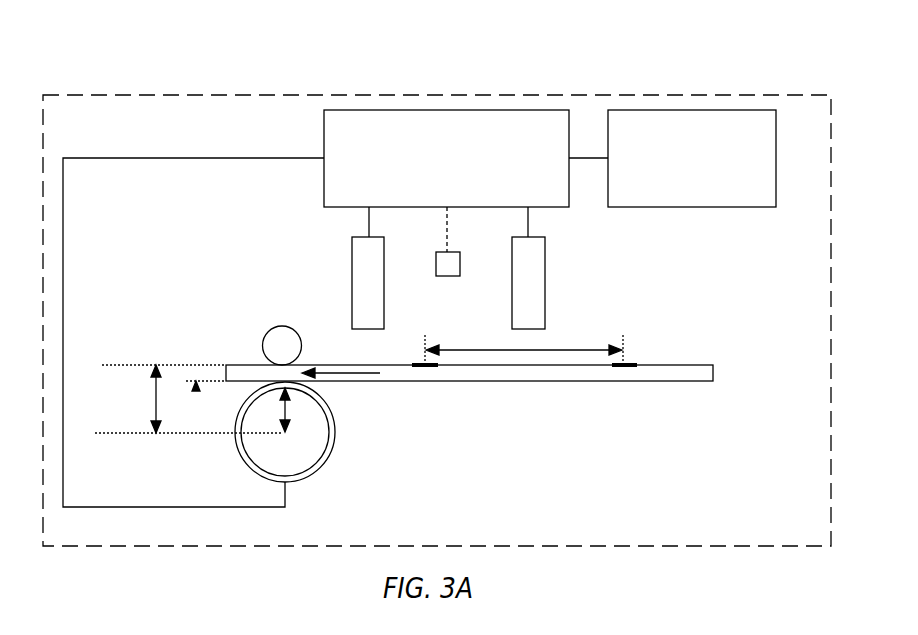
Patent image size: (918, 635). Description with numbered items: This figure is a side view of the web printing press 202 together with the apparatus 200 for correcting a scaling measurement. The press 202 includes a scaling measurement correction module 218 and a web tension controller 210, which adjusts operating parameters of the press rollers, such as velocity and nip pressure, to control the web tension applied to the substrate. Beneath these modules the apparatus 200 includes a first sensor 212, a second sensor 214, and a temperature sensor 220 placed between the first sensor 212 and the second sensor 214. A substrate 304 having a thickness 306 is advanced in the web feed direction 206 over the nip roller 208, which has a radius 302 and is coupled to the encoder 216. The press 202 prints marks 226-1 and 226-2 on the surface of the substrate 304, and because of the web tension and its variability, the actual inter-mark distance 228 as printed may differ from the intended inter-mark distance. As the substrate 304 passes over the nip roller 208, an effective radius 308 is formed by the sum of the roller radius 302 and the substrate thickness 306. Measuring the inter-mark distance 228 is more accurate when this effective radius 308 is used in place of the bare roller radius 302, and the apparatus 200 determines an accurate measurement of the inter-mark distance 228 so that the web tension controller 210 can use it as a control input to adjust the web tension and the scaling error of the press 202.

The apparatus 200 is at (178, 214).
The web printing press 202 is at (670, 95).
The web feed direction 206 is at (348, 372).
The nip roller 208 is at (325, 462).
The web tension controller 210 is at (707, 190).
The first sensor 212 is at (545, 255).
The second sensor 214 is at (352, 260).
The encoder 216 is at (247, 462).
The scaling measurement correction module 218 is at (462, 190).
The temperature sensor 220 is at (460, 258).
The mark 226-1 is at (425, 382).
The mark 226-2 is at (623, 382).
The inter-mark distance 228 is at (580, 349).
The radius 302 is at (289, 407).
The substrate 304 is at (685, 365).
The thickness 306 is at (196, 356).
The effective radius 308 is at (156, 396).